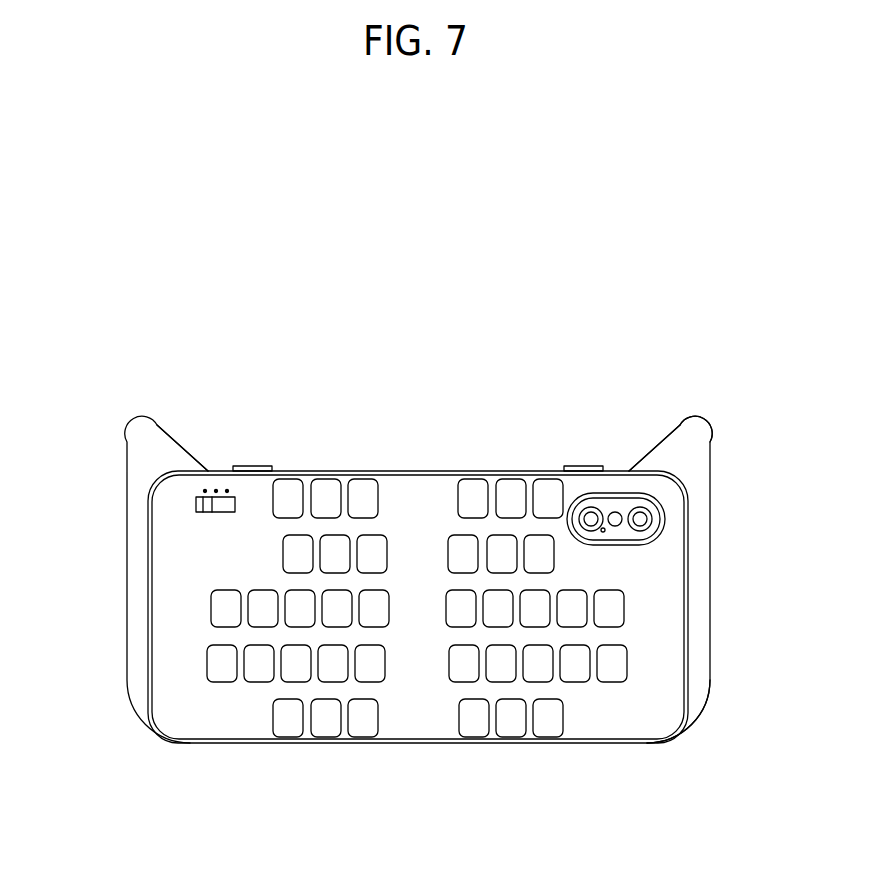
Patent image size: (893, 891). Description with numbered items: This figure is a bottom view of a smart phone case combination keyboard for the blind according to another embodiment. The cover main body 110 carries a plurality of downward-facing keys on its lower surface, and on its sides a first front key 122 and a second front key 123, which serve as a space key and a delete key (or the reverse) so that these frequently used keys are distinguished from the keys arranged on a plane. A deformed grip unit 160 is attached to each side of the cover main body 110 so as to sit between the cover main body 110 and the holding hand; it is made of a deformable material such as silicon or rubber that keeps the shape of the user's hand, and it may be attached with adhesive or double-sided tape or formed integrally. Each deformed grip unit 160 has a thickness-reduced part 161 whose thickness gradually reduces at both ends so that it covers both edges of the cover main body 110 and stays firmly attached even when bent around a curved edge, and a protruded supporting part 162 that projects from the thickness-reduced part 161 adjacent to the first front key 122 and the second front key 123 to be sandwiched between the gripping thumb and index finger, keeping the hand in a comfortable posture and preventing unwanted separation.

The cover main body 110 is at (432, 463).
The first front key 122 is at (255, 466).
The second front key 123 is at (585, 466).
The deformed grip unit 160 is at (120, 578).
The thickness-reduced part 161 is at (652, 443).
The protruded supporting part 162 is at (697, 418).